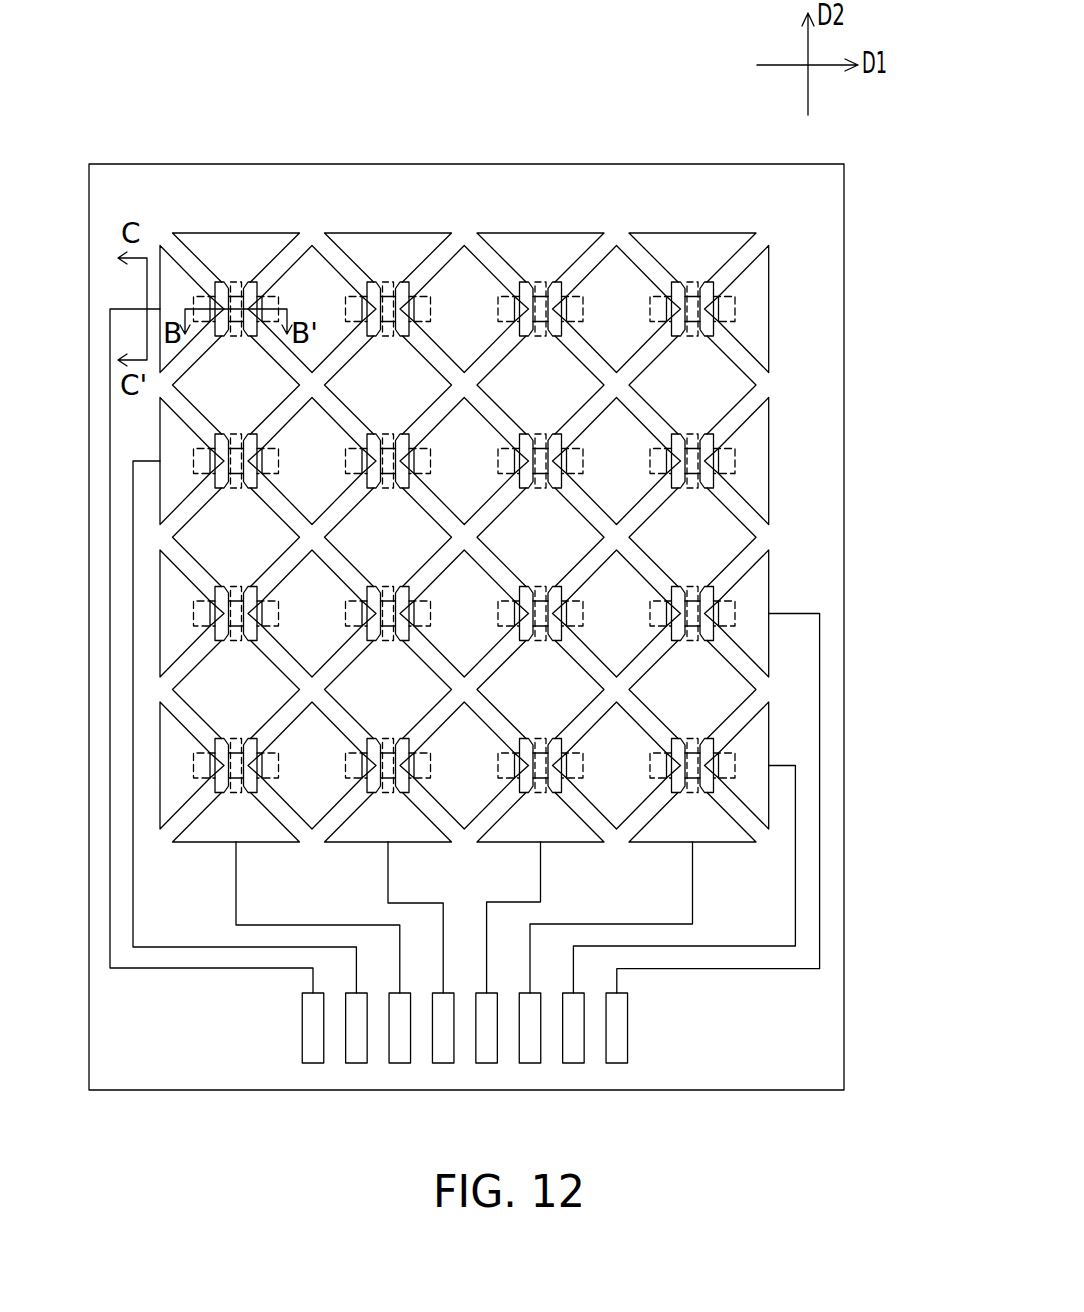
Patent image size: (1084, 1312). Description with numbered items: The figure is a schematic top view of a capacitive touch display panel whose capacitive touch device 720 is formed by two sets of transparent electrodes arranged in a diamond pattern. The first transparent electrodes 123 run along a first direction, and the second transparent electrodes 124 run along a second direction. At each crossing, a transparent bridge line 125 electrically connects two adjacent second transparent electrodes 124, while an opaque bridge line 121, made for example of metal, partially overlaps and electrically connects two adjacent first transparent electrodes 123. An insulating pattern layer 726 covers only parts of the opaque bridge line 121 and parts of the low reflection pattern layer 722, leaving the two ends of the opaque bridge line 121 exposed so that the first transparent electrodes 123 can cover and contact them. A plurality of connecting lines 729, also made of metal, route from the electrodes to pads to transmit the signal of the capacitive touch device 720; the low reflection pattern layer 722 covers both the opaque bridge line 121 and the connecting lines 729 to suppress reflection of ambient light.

The opaque bridge line 121 is at (195, 302).
The first transparent electrodes 123 is at (760, 273).
The second transparent electrodes 124 is at (665, 247).
The transparent bridge line 125 is at (695, 293).
The capacitive touch device 720 is at (860, 1140).
The low reflection pattern layer 722 is at (280, 300).
The insulating pattern layer 726 is at (227, 290).
The connecting lines 729 is at (147, 968).